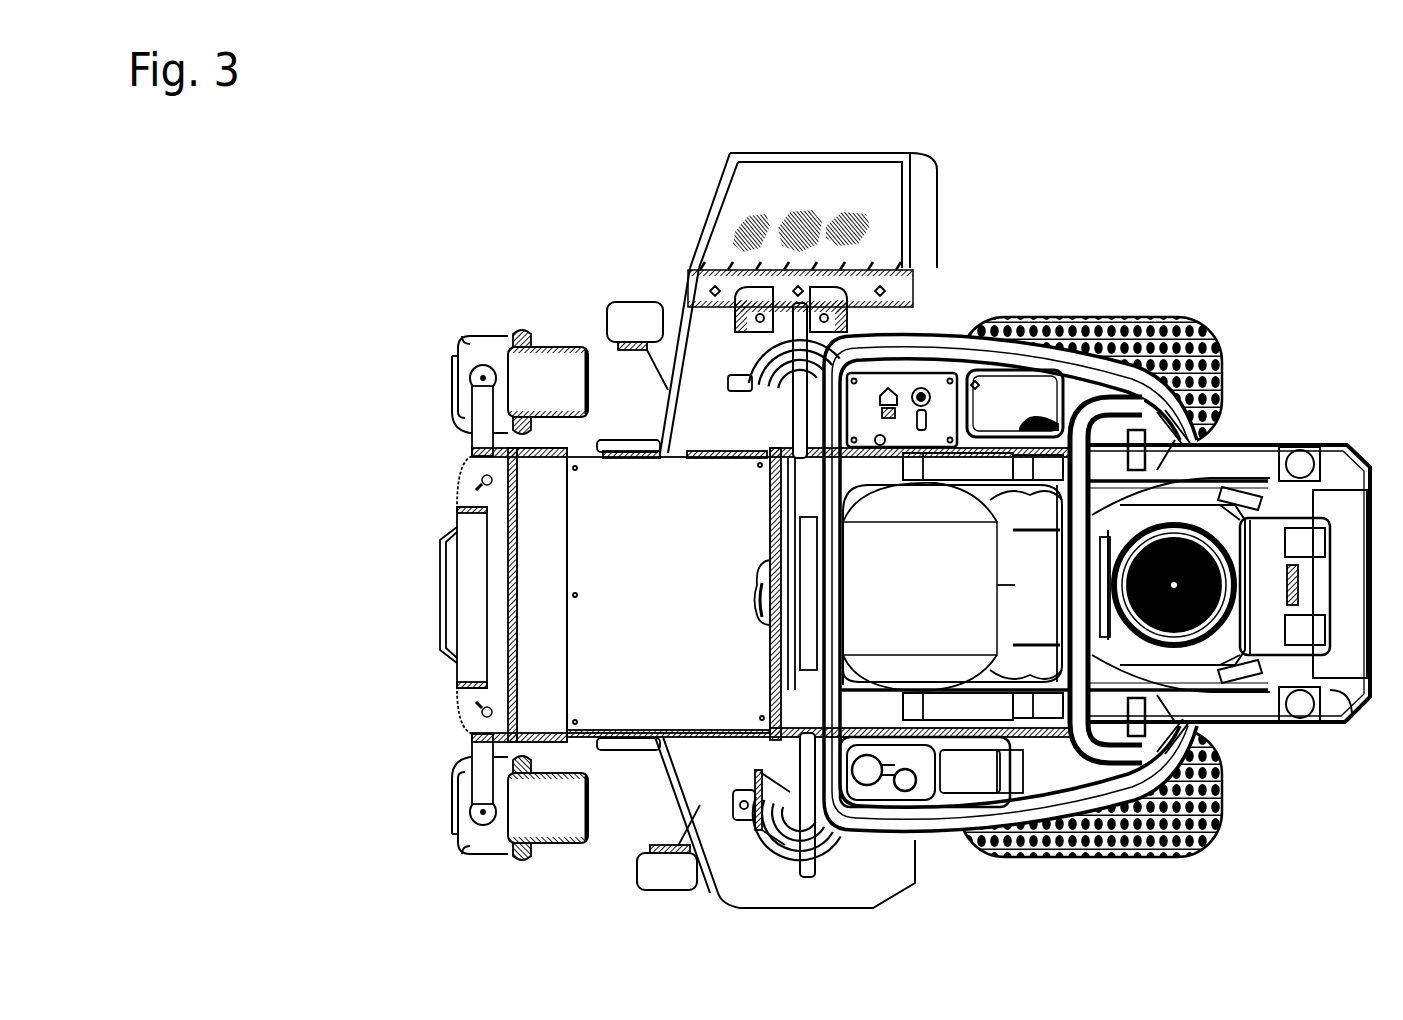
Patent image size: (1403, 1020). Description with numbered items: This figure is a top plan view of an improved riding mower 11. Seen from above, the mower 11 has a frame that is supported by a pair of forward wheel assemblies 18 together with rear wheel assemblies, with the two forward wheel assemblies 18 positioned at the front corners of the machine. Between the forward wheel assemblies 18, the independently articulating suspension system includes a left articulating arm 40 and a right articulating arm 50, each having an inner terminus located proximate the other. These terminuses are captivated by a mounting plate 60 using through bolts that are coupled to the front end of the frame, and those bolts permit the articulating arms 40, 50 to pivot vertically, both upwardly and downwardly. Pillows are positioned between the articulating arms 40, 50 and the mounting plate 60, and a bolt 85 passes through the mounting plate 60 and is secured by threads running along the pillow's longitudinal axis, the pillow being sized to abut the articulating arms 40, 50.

The riding mower 11 is at (1058, 268).
The forward wheel assemblies 18 is at (549, 368).
The left articulating arm 40 is at (470, 452).
The right articulating arm 50 is at (478, 758).
The mounting plate 60 is at (472, 597).
The bolt 85 is at (484, 483).